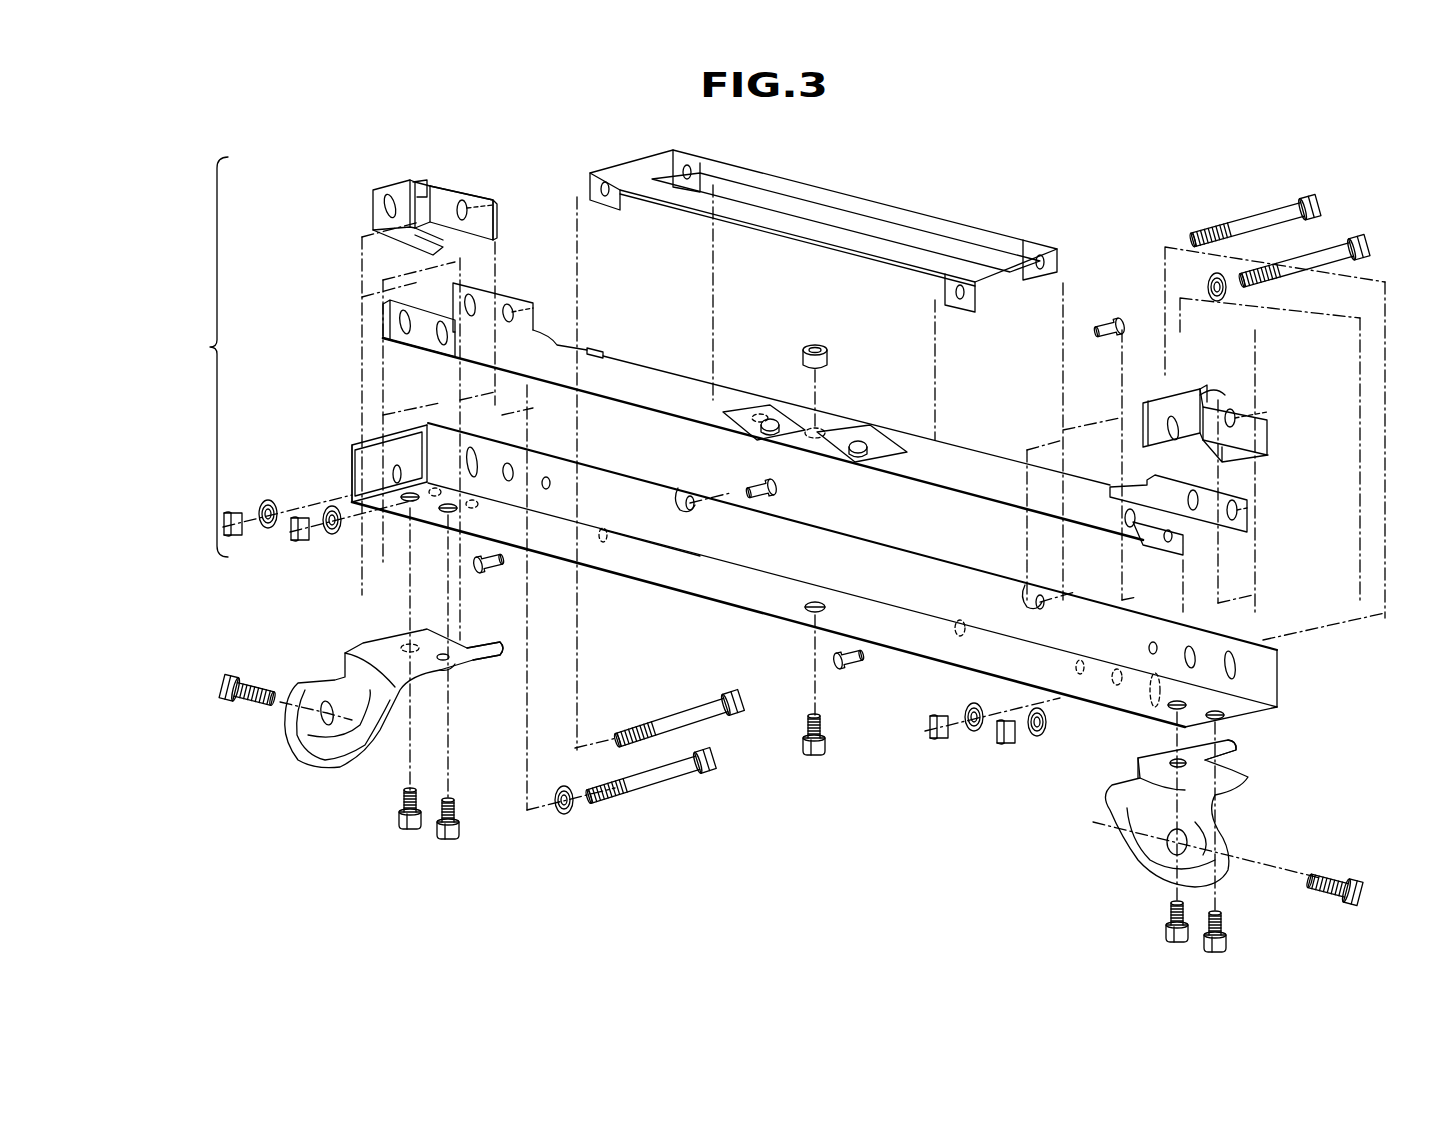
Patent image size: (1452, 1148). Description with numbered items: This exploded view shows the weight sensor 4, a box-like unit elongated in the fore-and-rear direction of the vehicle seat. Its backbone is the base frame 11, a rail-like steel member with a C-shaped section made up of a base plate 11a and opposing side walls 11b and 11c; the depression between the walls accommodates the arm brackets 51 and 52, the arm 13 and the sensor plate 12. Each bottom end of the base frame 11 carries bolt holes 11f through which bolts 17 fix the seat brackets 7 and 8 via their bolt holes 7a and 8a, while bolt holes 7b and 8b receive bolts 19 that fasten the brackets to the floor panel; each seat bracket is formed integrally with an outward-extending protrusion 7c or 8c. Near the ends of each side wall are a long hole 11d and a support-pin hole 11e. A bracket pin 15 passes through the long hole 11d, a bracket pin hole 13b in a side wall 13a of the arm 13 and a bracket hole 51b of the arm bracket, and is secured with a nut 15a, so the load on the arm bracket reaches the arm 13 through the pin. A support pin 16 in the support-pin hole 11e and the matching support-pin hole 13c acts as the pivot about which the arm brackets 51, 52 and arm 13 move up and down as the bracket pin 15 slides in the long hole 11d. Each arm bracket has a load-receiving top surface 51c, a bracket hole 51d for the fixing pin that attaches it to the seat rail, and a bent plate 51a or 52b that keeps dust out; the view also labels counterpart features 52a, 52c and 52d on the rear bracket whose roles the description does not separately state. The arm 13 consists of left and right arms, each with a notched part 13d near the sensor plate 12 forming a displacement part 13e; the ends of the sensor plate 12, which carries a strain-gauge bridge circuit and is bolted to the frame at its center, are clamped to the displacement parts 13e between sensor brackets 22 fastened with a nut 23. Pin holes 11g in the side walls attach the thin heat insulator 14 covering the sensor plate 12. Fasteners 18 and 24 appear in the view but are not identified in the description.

The weight sensor 4 is at (208, 357).
The seat bracket 7 is at (279, 757).
The bolt hole 7a is at (450, 665).
The bolt hole 7b is at (327, 700).
The protrusion 7c is at (392, 688).
The seat bracket 8 is at (1125, 848).
The bolt hole 8a is at (1172, 760).
The bolt hole 8b is at (1172, 852).
The protrusion 8c is at (1237, 762).
The base frame 11 is at (905, 652).
The base plate 11a is at (632, 558).
The side wall 11b is at (417, 447).
The side wall 11c is at (350, 468).
The long hole 11d is at (472, 447).
The support-pin hole 11e is at (508, 465).
The bolt hole 11f is at (448, 512).
The pin hole 11g is at (685, 500).
The sensor plate 12 is at (805, 440).
The arm 13 is at (945, 440).
The side wall 13a is at (500, 298).
The bracket pin hole 13b is at (472, 294).
The support-pin hole 13c is at (510, 303).
The notched part 13d is at (758, 410).
The displacement part 13e is at (728, 418).
The heat insulator 14 is at (884, 192).
The bracket pin 15 is at (1330, 250).
The nut 15a is at (237, 512).
The support pin 16 is at (1262, 226).
The bolt 17 is at (450, 840).
The pin 18 is at (1110, 318).
The bolt 19 is at (252, 702).
The sensor bracket 22 is at (835, 430).
The nut 23 is at (766, 432).
The bolt 24 is at (806, 745).
The arm bracket 51 is at (370, 193).
The bent plate 51a is at (383, 222).
The bracket hole 51b is at (468, 206).
The top surface 51c is at (462, 192).
The bracket hole 51d is at (438, 182).
The arm bracket 52 is at (1146, 390).
The arm bracket hole 52a is at (1240, 430).
The bent plate 52b is at (1240, 452).
The arm bracket notch 52c is at (1152, 390).
The arm bracket edge 52d is at (1215, 390).